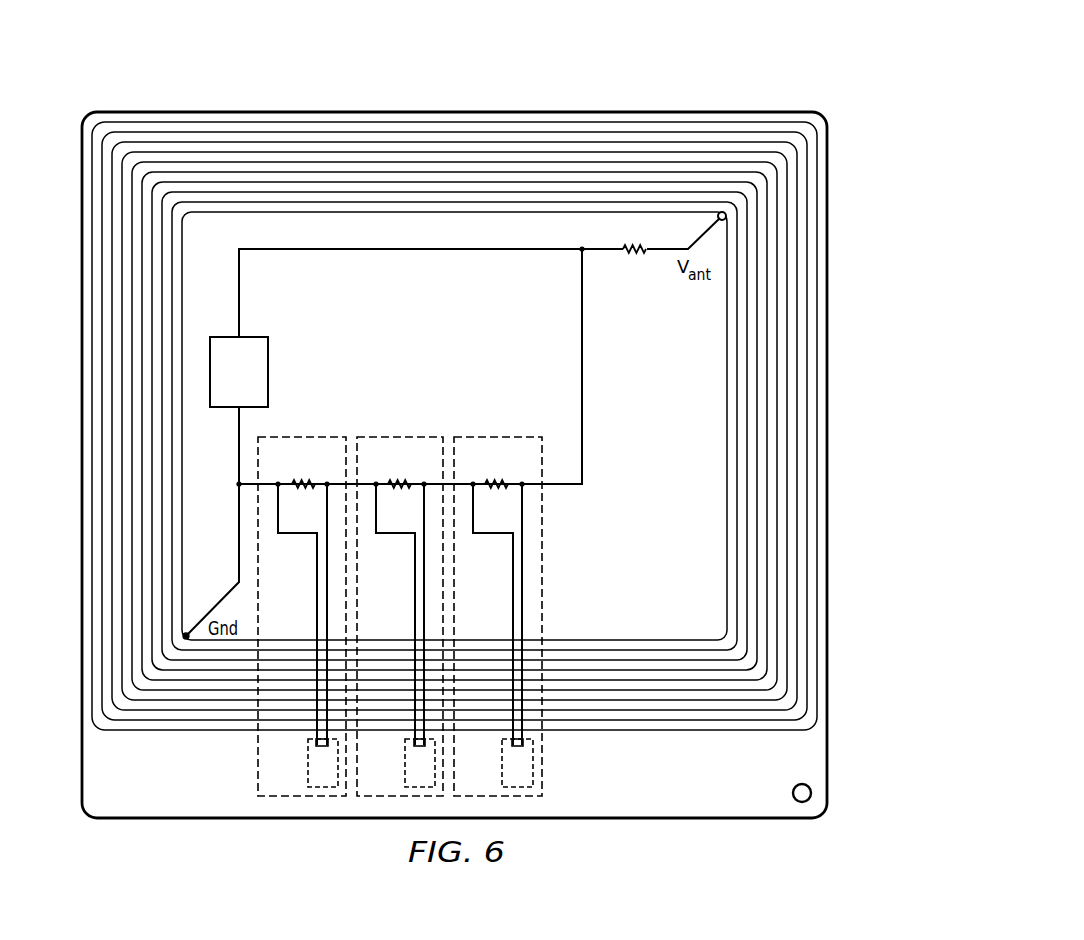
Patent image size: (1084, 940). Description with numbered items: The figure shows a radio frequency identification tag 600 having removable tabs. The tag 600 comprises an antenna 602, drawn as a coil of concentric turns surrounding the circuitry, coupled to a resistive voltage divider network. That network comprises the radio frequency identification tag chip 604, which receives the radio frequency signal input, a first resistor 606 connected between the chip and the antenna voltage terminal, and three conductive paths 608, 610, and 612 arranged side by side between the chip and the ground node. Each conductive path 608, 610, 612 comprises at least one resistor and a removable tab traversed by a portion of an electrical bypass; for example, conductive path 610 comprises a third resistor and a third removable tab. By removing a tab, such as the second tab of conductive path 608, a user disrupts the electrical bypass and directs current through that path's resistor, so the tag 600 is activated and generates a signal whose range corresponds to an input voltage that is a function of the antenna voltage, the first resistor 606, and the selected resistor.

The radio frequency identification tag 600 is at (701, 59).
The antenna 602 is at (356, 111).
The radio frequency identification tag chip 604 is at (269, 366).
The resistor R1 606 is at (634, 258).
The conductive path 608 is at (323, 431).
The conductive path 610 is at (421, 431).
The conductive path 612 is at (519, 431).